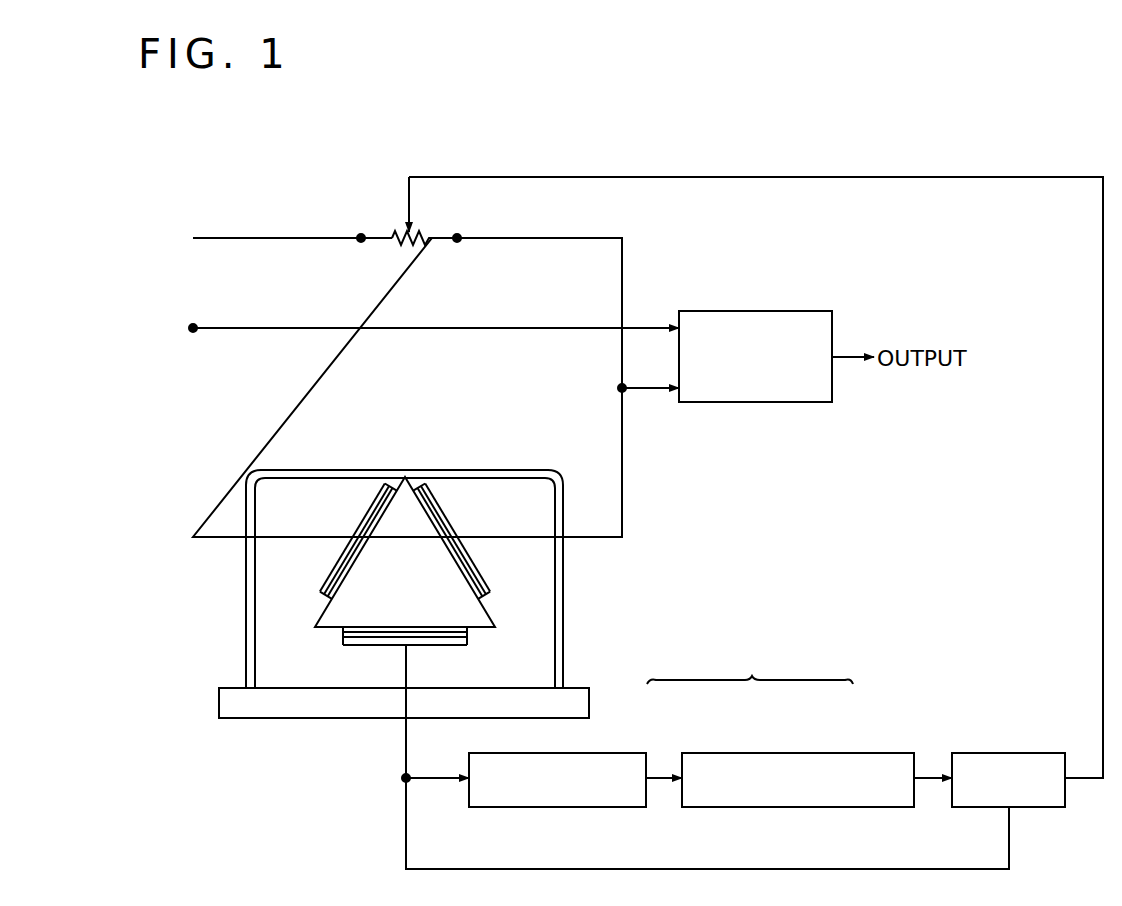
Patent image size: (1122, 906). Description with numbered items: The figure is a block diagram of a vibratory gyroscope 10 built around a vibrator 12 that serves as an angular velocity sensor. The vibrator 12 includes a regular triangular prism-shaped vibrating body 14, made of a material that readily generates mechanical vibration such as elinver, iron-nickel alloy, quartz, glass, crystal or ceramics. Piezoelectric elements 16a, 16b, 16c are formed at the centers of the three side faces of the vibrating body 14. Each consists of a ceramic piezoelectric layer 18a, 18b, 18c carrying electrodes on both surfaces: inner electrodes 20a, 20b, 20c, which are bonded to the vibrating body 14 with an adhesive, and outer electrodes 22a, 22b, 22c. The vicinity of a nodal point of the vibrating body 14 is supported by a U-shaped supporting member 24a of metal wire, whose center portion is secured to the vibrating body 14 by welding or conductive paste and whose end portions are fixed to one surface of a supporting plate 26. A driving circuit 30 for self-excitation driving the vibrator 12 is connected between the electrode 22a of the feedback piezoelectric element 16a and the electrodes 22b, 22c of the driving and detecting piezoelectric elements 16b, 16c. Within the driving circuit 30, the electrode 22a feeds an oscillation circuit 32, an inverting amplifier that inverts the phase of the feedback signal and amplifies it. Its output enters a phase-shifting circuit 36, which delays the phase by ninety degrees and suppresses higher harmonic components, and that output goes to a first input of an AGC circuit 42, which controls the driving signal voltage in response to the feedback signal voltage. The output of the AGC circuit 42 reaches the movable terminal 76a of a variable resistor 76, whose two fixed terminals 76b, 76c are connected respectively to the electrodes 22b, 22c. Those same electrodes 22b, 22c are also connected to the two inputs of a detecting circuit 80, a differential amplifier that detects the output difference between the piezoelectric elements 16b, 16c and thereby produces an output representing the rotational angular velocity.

The vibratory gyroscope 10 is at (240, 150).
The vibrator 12 is at (416, 468).
The vibrating body 14 is at (400, 500).
The feedback piezoelectric element 16a is at (387, 658).
The driving and detecting piezoelectric element 16b is at (482, 569).
The driving and detecting piezoelectric element 16c is at (326, 559).
The piezoelectric layer 18a is at (344, 640).
The piezoelectric layer 18b is at (487, 592).
The piezoelectric layer 18c is at (322, 592).
The electrode 20a is at (342, 632).
The electrode 20b is at (484, 608).
The electrode 20c is at (328, 603).
The electrode 22a is at (372, 646).
The electrode 22b is at (474, 568).
The electrode 22c is at (333, 567).
The supporting member 24a is at (528, 456).
The supporting plate 26 is at (268, 712).
The driving circuit 30 is at (750, 664).
The oscillation circuit 32 is at (577, 748).
The phase-shifting circuit 36 is at (798, 748).
The AGC circuit 42 is at (938, 748).
The variable resistor 76 is at (421, 249).
The movable terminal 76a is at (405, 218).
The fixed terminal 76b is at (459, 236).
The fixed terminal 76c is at (359, 236).
The detecting circuit 80 is at (755, 316).